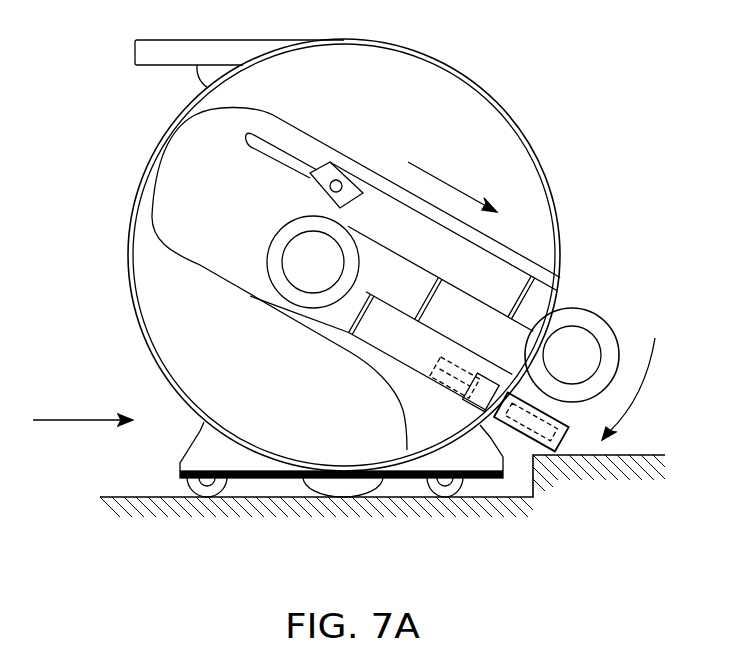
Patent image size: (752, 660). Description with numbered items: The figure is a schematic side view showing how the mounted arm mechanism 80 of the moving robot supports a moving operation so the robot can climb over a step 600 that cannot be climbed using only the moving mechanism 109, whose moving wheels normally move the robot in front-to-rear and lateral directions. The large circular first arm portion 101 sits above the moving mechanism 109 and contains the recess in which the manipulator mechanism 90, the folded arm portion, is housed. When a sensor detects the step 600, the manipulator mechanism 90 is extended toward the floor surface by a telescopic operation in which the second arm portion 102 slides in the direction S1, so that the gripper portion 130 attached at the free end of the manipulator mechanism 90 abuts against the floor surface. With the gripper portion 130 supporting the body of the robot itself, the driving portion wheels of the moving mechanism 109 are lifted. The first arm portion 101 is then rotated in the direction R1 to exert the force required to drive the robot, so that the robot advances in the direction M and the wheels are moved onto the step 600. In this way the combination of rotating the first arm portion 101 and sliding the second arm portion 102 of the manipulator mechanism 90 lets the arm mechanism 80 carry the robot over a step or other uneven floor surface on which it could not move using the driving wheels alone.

The arm mechanism 80 is at (131, 307).
The first arm portion 101 is at (433, 82).
The manipulator mechanism 90 is at (293, 120).
The second arm portion 102 is at (370, 203).
The gripper portion 130 is at (520, 447).
The moving mechanism portion 109 is at (233, 457).
The step 600 is at (562, 478).
The sliding direction S1 is at (450, 186).
The rotation direction R1 is at (641, 388).
The movement direction M is at (57, 424).